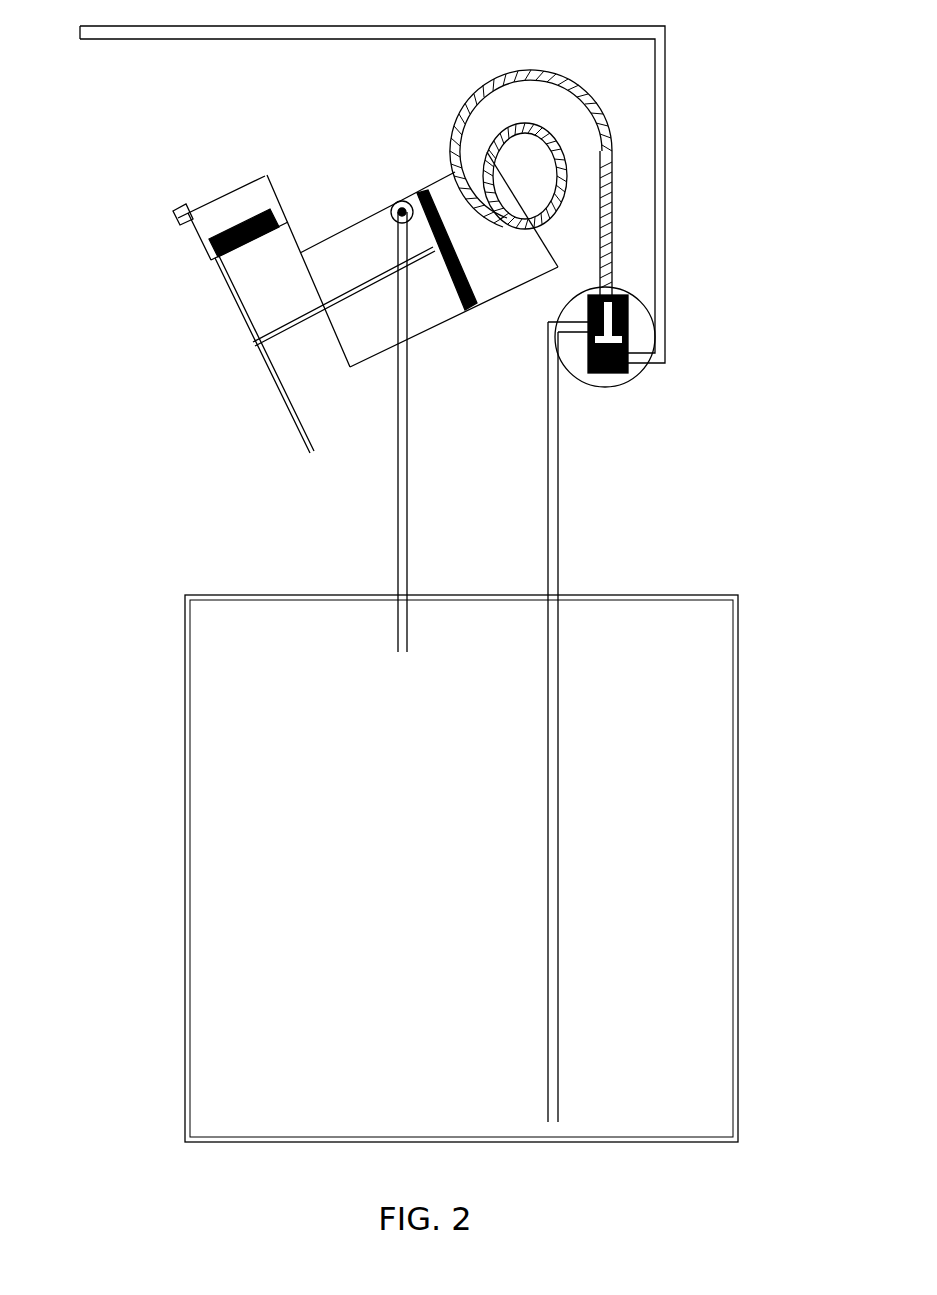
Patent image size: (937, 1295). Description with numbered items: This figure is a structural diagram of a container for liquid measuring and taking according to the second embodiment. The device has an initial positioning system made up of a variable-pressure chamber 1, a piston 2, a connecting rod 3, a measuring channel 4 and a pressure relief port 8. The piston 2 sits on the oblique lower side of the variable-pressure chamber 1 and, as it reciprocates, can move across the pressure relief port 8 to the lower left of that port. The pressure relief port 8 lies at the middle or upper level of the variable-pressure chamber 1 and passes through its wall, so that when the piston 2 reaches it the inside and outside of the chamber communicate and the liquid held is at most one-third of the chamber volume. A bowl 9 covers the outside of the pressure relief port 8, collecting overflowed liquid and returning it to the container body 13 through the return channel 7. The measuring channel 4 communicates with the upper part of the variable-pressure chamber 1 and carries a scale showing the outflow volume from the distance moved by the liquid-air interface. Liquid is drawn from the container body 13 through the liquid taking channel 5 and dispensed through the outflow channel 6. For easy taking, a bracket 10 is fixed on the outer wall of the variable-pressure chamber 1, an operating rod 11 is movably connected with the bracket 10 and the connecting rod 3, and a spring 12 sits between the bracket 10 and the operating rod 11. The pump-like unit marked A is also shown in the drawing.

The variable-pressure chamber 1 is at (447, 195).
The piston 2 is at (403, 190).
The connecting rod 3 is at (307, 315).
The measuring channel 4 is at (460, 110).
The liquid taking channel 5 is at (560, 560).
The outflow channel 6 is at (313, 38).
The return channel 7 is at (409, 447).
The pressure relief port 8 is at (393, 205).
The bowl 9 is at (373, 214).
The bracket 10 is at (247, 193).
The operating rod 11 is at (217, 303).
The spring 12 is at (213, 215).
The container body 13 is at (680, 595).
The pump A is at (640, 373).